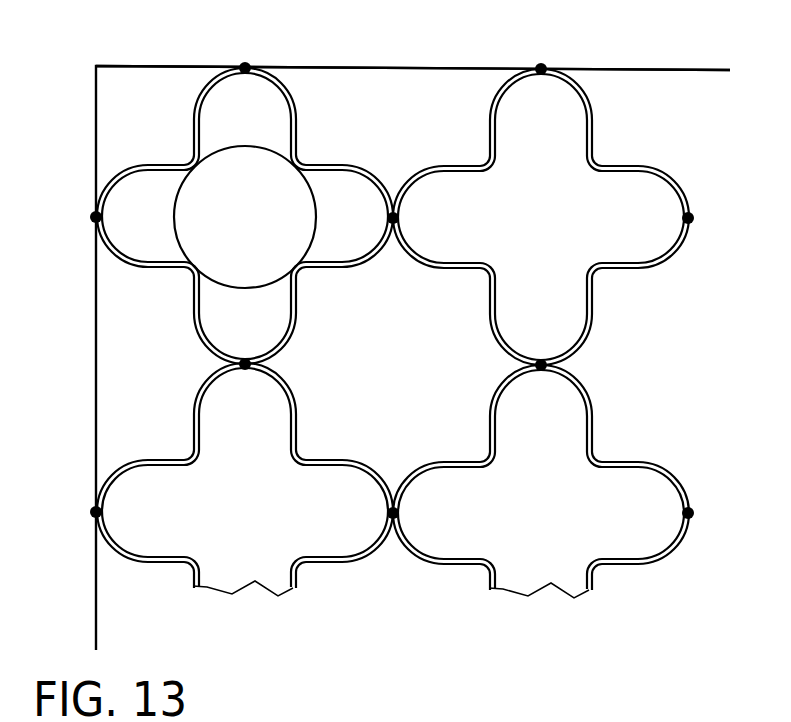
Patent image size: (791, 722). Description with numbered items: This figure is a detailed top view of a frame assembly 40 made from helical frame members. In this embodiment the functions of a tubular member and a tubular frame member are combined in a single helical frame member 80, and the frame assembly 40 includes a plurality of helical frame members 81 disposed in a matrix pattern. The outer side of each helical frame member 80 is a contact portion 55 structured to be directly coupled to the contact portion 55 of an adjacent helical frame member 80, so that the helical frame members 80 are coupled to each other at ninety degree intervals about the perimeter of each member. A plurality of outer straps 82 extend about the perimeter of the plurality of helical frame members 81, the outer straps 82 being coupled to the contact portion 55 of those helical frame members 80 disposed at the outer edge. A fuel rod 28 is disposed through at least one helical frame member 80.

The frame assembly 40 is at (445, 70).
The outer strap 82 is at (647, 70).
The helical frame member 80 is at (298, 133).
The plurality of helical frame members 81 is at (492, 133).
The contact portion 55 is at (382, 184).
The fuel rod 28 is at (293, 263).